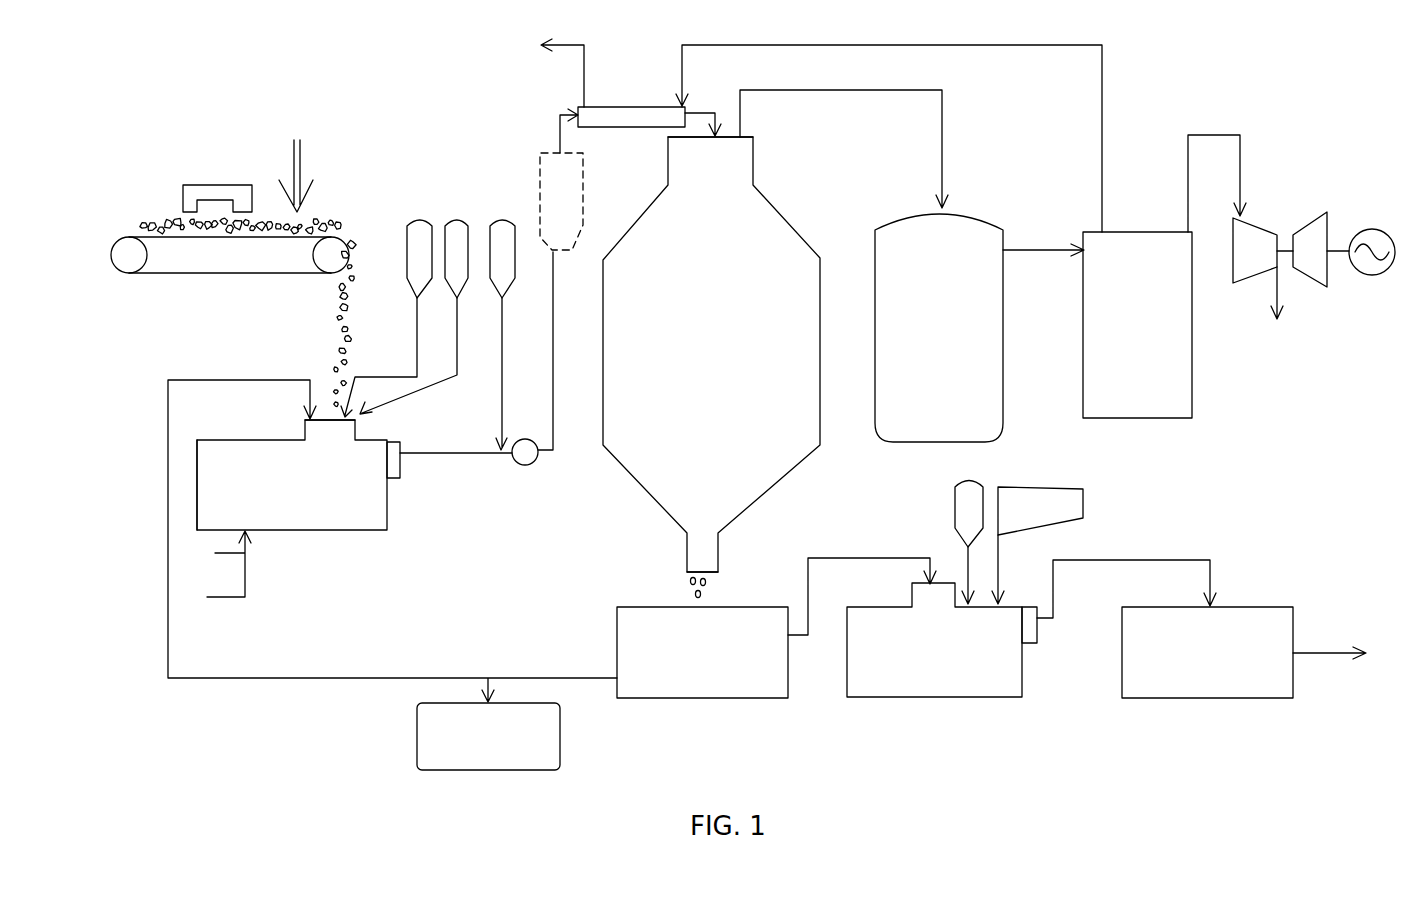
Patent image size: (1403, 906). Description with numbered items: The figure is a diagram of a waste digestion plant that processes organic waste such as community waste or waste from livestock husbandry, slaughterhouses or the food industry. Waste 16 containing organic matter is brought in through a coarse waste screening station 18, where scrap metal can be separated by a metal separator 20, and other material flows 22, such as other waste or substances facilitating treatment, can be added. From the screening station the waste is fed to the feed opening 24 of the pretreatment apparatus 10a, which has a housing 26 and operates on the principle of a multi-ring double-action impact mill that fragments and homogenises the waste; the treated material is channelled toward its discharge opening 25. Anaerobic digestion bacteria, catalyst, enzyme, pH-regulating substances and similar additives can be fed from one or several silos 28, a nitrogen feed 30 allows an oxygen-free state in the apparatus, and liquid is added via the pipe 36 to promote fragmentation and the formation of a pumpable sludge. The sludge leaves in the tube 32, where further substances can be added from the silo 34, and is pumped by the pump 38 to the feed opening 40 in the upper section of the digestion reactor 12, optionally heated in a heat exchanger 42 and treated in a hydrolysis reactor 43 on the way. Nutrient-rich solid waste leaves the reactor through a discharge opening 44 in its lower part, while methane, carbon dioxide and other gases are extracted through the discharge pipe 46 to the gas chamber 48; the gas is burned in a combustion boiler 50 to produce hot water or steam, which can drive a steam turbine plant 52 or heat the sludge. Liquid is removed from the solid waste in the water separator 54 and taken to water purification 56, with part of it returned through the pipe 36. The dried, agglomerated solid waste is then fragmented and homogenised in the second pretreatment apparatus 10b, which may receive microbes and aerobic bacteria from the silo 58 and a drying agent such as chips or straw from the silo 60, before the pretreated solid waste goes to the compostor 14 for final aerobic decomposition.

The pretreatment apparatus 10a is at (315, 505).
The pretreatment apparatus 10b is at (962, 668).
The digestion reactor 12 is at (722, 388).
The compostor 14 is at (1222, 668).
The waste 16 is at (153, 192).
The coarse waste screening station 18 is at (243, 94).
The metal separator 20 is at (196, 195).
The other material flows 22 is at (296, 160).
The feed opening 24 is at (330, 432).
The discharge opening 25 is at (397, 478).
The housing 26 is at (196, 482).
The silos 28 is at (412, 256).
The nitrogen feed 30 is at (223, 564).
The tube 32 is at (457, 457).
The silo 34 is at (503, 232).
The pipe 36 is at (246, 380).
The pump 38 is at (537, 465).
The feed opening 40 is at (715, 165).
The heat exchanger 42 is at (607, 114).
The hydrolysis reactor 43 is at (571, 197).
The discharge opening 44 is at (706, 556).
The discharge pipe 46 is at (868, 97).
The gas chamber 48 is at (956, 348).
The combustion boiler 50 is at (1150, 344).
The steam turbine plant 52 is at (1309, 160).
The water separator 54 is at (716, 668).
The water purification 56 is at (504, 758).
The silo 58 is at (958, 519).
The silo 60 is at (1060, 500).